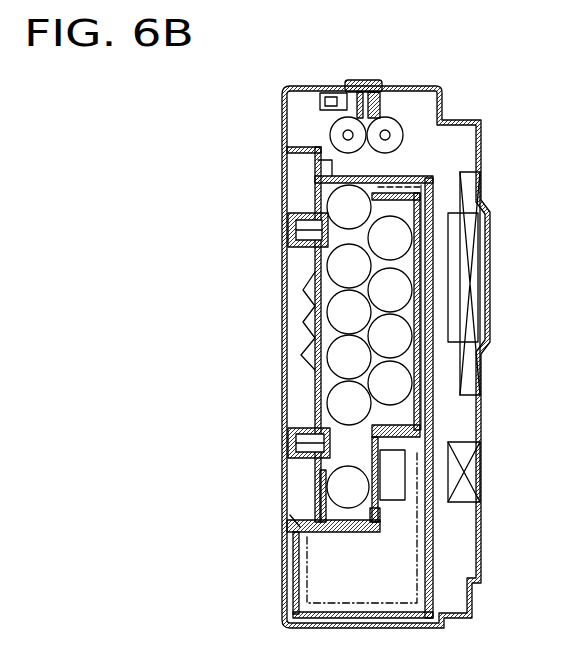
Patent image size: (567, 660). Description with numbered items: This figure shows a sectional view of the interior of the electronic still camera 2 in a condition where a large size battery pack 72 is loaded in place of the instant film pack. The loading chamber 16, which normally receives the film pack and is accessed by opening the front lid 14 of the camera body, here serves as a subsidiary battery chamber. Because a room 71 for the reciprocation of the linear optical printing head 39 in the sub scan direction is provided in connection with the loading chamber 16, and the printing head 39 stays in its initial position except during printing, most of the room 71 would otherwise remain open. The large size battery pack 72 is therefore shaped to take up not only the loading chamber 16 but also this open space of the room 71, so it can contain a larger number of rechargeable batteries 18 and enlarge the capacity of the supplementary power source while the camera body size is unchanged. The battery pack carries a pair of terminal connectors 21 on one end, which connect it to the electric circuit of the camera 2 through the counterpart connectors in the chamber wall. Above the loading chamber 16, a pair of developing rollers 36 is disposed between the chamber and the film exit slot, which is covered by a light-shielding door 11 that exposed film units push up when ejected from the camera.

The electronic still camera 2 is at (252, 567).
The light-shielding door 11 is at (373, 80).
The front lid 14 is at (285, 470).
The loading chamber 16 is at (322, 499).
The rechargeable batteries 18 is at (340, 403).
The terminal connectors 21 is at (330, 176).
The developing rollers 36 is at (300, 121).
The linear optical printing head 39 is at (395, 475).
The room 71 is at (403, 438).
The large size battery pack 72 is at (285, 307).